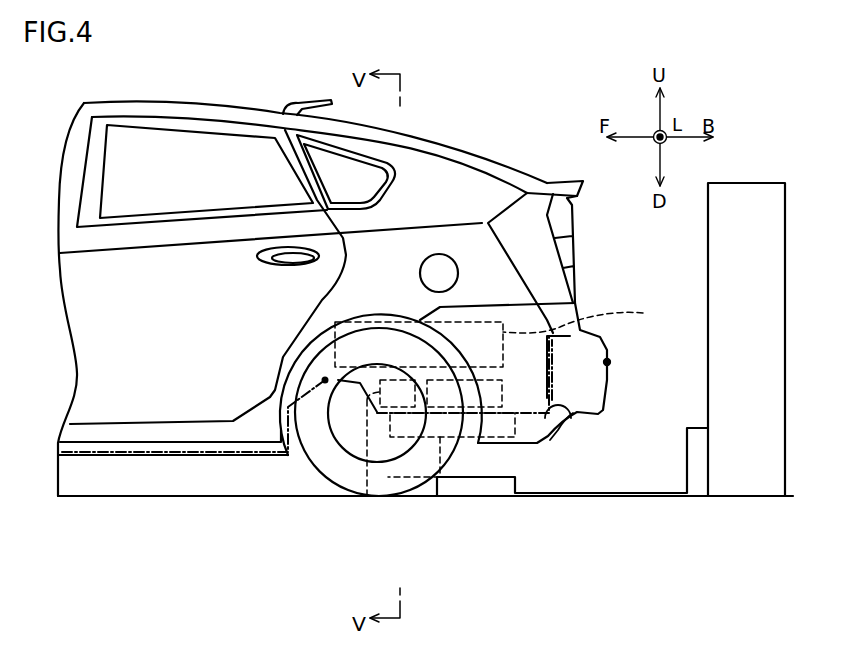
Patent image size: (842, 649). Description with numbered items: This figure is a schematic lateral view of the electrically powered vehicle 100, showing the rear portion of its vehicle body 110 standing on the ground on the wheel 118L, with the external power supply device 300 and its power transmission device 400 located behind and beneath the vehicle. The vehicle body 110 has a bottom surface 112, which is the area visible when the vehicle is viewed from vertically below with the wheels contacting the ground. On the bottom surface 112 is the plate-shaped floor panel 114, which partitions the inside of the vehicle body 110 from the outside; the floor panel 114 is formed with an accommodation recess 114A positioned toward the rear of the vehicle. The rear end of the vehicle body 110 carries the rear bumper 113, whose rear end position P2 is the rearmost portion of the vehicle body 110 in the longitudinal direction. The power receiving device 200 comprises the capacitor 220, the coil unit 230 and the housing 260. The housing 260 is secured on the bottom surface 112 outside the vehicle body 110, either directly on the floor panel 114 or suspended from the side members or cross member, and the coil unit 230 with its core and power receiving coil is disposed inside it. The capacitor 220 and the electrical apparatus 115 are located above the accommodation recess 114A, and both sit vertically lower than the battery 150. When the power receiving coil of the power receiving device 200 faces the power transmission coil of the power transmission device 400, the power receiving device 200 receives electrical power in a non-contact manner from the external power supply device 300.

The electrically powered vehicle 100 is at (140, 99).
The vehicle body 110 is at (197, 103).
The bottom surface 112 is at (147, 453).
The rear bumper 113 is at (587, 387).
The floor panel 114 is at (208, 454).
The accommodation recess 114A is at (578, 432).
The electrical apparatus 115 is at (503, 393).
The wheel 118L is at (320, 456).
The battery 150 is at (506, 335).
The power receiving device 200 is at (474, 558).
The capacitor 220 is at (367, 496).
The coil unit 230 is at (452, 425).
The housing 260 is at (440, 477).
The external power supply device 300 is at (750, 180).
The power transmission device 400 is at (498, 488).
The rear end position P2 is at (607, 362).